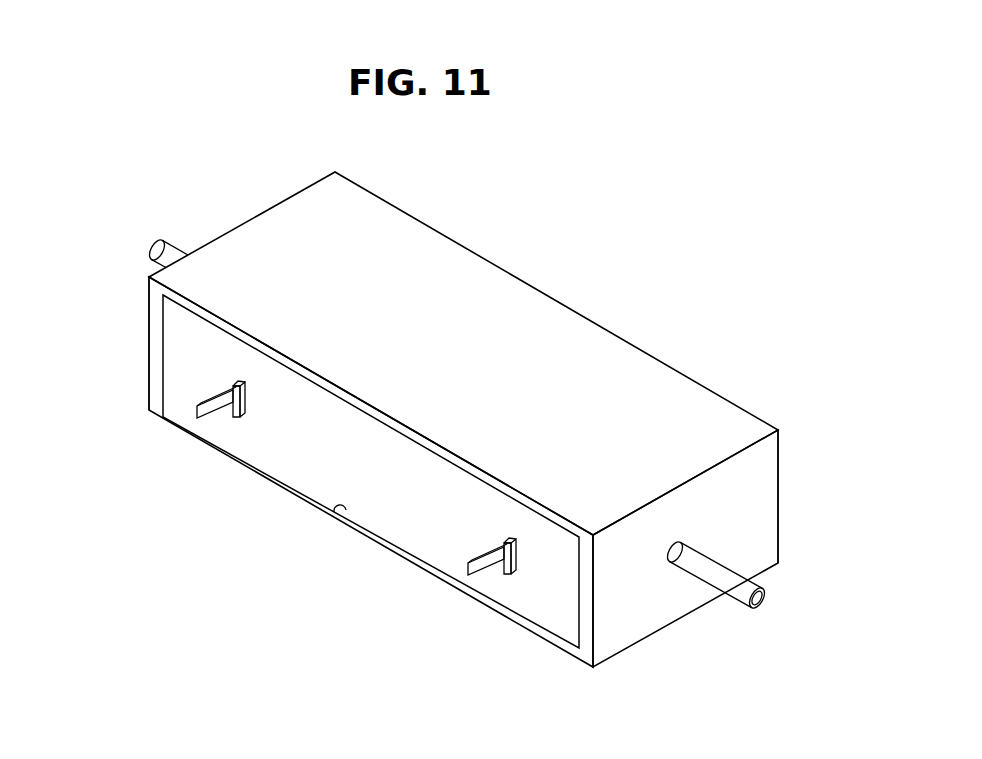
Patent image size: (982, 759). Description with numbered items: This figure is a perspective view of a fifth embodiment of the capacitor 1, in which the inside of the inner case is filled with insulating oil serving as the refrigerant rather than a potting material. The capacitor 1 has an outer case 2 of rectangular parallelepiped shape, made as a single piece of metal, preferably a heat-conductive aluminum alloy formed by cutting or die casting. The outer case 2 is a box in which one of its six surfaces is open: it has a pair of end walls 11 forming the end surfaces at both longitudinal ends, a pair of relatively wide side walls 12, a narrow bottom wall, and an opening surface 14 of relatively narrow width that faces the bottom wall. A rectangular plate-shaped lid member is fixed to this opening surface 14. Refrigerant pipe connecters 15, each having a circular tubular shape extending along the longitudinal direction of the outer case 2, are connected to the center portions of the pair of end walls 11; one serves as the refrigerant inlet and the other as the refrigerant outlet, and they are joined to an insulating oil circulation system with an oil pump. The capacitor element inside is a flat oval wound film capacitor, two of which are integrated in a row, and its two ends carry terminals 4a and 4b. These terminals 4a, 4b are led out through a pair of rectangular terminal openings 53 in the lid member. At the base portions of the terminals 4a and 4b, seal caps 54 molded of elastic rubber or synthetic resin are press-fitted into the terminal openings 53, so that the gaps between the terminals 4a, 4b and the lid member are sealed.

The capacitor 1 is at (702, 357).
The outer case 2 is at (549, 320).
The terminal 4a is at (210, 418).
The terminal 4b is at (482, 575).
The end wall 11 is at (153, 355).
The side wall 12 is at (420, 265).
The opening surface 14 is at (333, 506).
The refrigerant pipe connecter 15 is at (173, 253).
The terminal opening 53 is at (247, 398).
The seal cap 54 is at (240, 417).